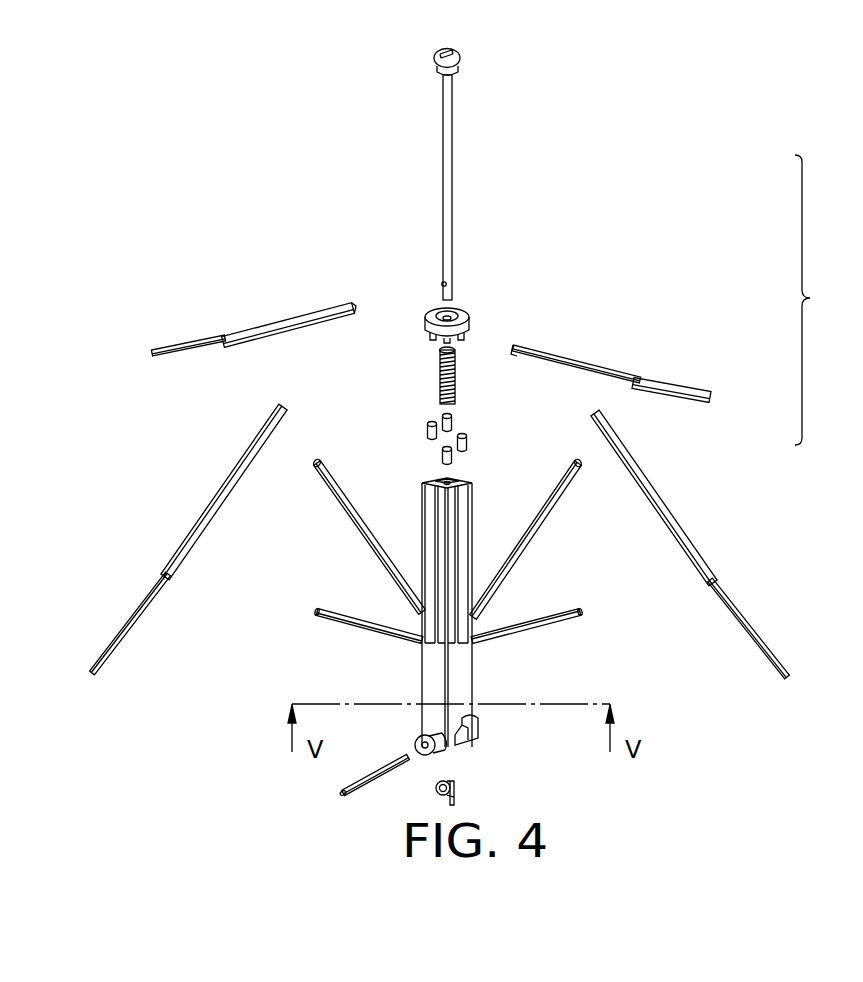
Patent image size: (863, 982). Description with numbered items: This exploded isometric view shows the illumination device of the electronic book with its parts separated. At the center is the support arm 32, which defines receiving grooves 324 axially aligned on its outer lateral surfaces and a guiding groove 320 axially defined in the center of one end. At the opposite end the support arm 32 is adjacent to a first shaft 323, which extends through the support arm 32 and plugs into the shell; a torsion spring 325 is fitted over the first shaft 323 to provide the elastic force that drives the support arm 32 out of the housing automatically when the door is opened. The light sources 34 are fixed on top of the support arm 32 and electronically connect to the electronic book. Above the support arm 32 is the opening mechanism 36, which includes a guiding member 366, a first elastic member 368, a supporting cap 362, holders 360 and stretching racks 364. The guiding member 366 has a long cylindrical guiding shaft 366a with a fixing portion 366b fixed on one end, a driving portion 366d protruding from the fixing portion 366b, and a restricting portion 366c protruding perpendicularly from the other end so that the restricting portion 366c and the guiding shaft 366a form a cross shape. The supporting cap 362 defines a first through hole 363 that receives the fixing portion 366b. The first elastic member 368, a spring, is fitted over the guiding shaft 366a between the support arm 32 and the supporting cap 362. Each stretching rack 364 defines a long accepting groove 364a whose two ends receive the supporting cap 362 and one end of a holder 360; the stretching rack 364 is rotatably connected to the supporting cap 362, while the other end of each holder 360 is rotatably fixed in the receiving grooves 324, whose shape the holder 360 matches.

The support arm 32 is at (488, 593).
The guiding groove 320 is at (460, 480).
The first shaft 323 is at (345, 785).
The receiving grooves 324 is at (437, 577).
The torsion spring 325 is at (457, 785).
The light sources 34 is at (427, 428).
The opening mechanism 36 is at (822, 300).
The holders 360 is at (557, 504).
The supporting cap 362 is at (455, 318).
The first through hole 363 is at (430, 318).
The stretching racks 364 is at (630, 383).
The accepting groove 364a is at (348, 307).
The guiding member 366 is at (547, 165).
The guiding shaft 366a is at (448, 122).
The fixing portion 366b is at (438, 68).
The restricting portion 366c is at (453, 279).
The driving portion 366d is at (453, 50).
The first elastic member 368 is at (455, 368).